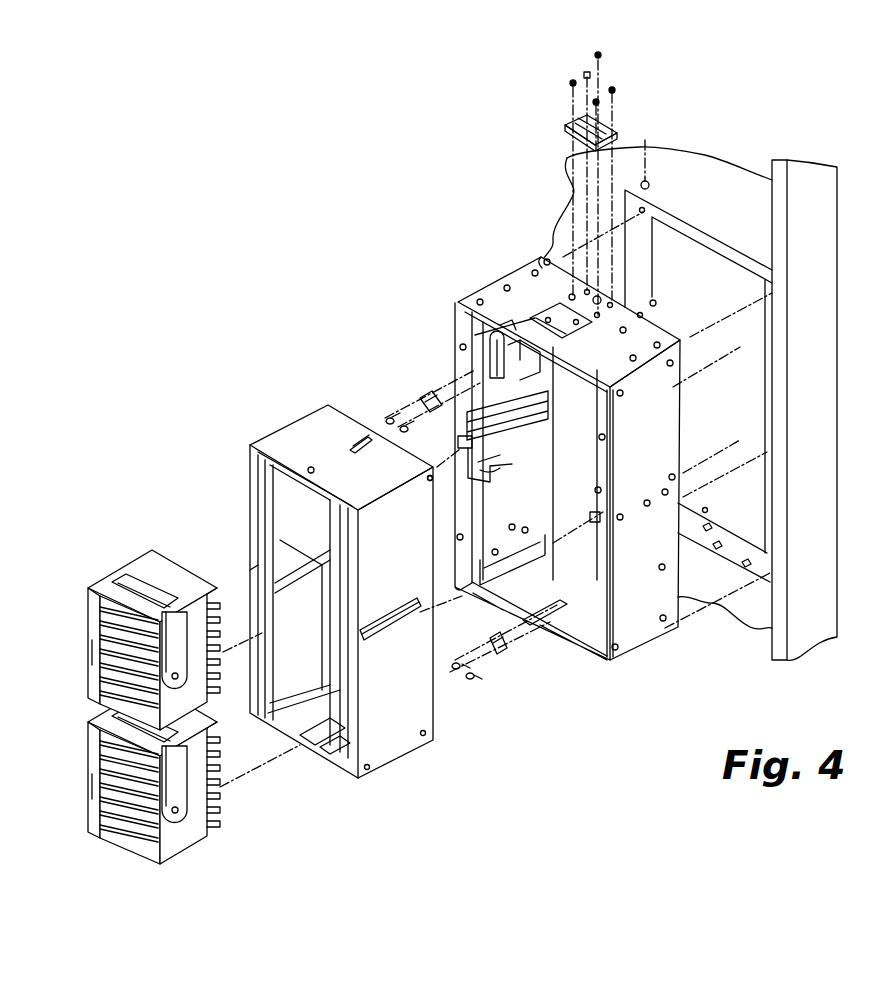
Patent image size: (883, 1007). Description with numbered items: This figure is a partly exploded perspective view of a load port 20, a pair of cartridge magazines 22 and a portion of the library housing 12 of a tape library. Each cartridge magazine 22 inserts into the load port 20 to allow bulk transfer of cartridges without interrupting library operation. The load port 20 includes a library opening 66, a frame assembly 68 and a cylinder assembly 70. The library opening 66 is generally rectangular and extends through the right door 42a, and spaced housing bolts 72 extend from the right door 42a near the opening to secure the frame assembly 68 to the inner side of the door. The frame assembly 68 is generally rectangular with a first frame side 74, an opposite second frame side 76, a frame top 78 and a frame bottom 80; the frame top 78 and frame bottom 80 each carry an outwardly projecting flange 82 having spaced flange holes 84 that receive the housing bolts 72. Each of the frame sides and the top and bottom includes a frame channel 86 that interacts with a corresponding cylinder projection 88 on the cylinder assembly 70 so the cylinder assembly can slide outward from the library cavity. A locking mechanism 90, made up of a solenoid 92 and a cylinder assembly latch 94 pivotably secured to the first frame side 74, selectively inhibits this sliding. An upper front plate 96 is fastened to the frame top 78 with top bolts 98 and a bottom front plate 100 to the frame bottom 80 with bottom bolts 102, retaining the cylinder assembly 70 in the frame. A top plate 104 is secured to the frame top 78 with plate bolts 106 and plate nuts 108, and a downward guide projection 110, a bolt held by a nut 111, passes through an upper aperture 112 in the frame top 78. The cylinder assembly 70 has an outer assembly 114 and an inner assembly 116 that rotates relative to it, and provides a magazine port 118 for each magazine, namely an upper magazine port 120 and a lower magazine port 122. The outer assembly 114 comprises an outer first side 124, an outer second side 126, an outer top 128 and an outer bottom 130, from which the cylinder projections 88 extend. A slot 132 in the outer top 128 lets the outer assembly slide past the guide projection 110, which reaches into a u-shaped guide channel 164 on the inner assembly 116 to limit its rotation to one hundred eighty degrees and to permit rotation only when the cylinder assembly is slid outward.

The library housing 12 is at (803, 158).
The load port 20 is at (210, 290).
The cartridge magazine 22 is at (122, 563).
The right door 42a is at (740, 167).
The library opening 66 is at (674, 359).
The frame assembly 68 is at (545, 444).
The cylinder assembly 70 is at (331, 538).
The housing bolt 72 is at (677, 227).
The first frame side 74 is at (460, 375).
The second frame side 76 is at (650, 617).
The frame top 78 is at (518, 287).
The frame bottom 80 is at (580, 627).
The flange 82 is at (542, 257).
The flange hole 84 is at (545, 260).
The frame channel 86 is at (505, 327).
The cylinder projection 88 is at (311, 467).
The locking mechanism 90 is at (487, 353).
The solenoid 92 is at (515, 348).
The cylinder assembly latch 94 is at (473, 373).
The upper front plate 96 is at (440, 400).
The top bolt 98 is at (392, 417).
The bottom front plate 100 is at (503, 655).
The bottom bolt 102 is at (470, 670).
The top plate 104 is at (573, 130).
The plate bolt 106 is at (617, 307).
The plate nut 108 is at (587, 75).
The downward guide projection 110 is at (645, 177).
The nut 111 is at (600, 57).
The upper aperture 112 is at (642, 249).
The outer assembly 114 is at (403, 727).
The inner assembly 116 is at (263, 710).
The magazine port 118 is at (290, 507).
The upper magazine port 120 is at (282, 540).
The lower magazine port 122 is at (330, 705).
The outer first side 124 is at (258, 450).
The outer second side 126 is at (375, 733).
The outer top 128 is at (313, 425).
The outer bottom 130 is at (348, 763).
The slot 132 is at (360, 440).
The guide channel 164 is at (363, 432).